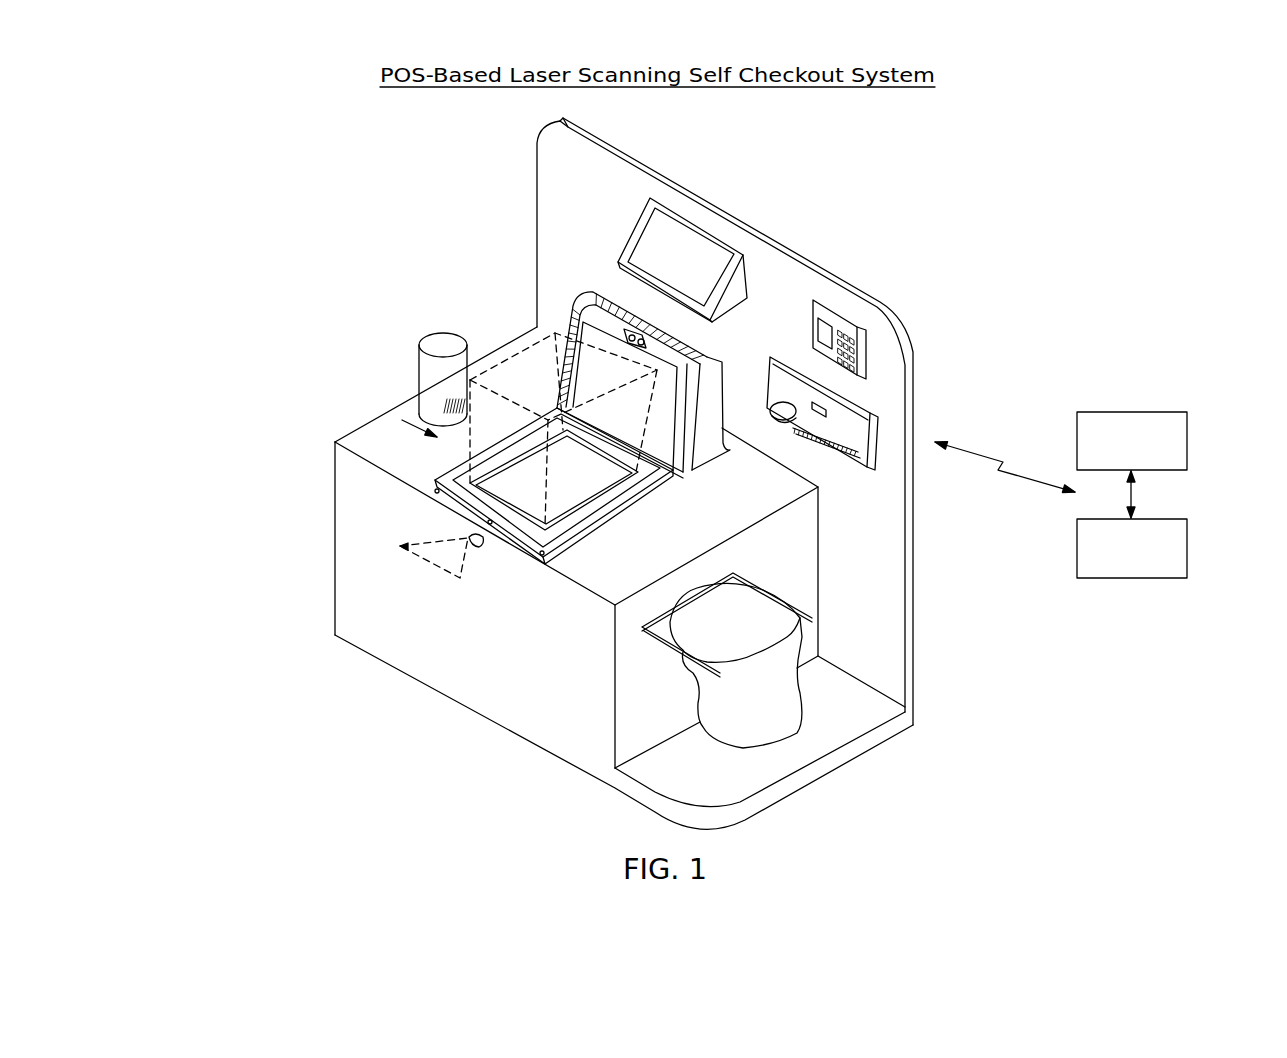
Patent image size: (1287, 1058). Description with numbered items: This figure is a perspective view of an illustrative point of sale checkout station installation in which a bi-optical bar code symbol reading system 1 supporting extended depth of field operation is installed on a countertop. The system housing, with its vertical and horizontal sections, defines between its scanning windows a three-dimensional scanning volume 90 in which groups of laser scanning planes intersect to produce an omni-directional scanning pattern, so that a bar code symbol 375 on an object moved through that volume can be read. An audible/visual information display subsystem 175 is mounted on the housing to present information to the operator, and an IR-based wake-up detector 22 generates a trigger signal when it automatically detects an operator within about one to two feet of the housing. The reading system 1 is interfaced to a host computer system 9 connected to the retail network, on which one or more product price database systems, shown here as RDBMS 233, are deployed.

The bar code symbol reading system 1 is at (717, 347).
The host computer system 9 is at (1188, 443).
The IR-based wake-up detector 22 is at (467, 536).
The 3D scanning volume 90 is at (505, 353).
The audible/visual information display subsystem 175 is at (633, 333).
The relational database management system (RDBMS) 233 is at (1188, 550).
The bar code symbol 375 is at (418, 383).